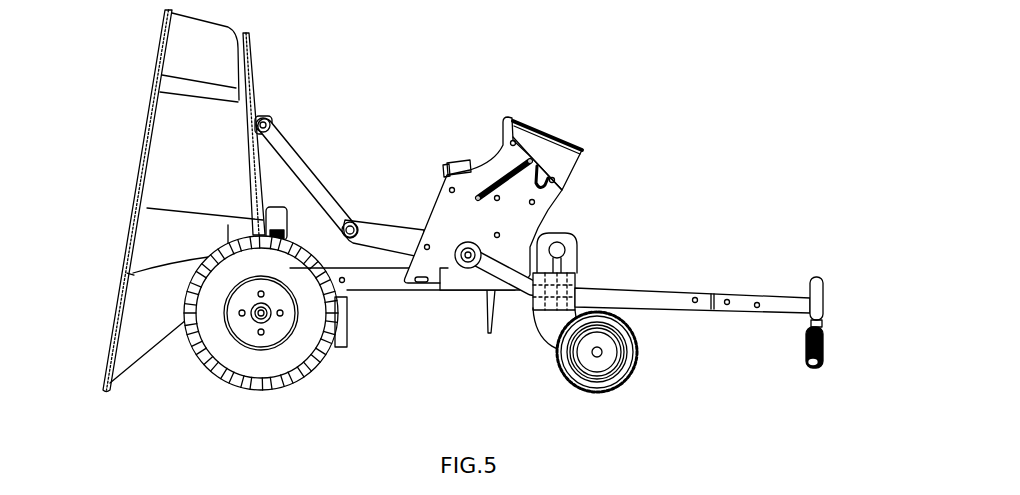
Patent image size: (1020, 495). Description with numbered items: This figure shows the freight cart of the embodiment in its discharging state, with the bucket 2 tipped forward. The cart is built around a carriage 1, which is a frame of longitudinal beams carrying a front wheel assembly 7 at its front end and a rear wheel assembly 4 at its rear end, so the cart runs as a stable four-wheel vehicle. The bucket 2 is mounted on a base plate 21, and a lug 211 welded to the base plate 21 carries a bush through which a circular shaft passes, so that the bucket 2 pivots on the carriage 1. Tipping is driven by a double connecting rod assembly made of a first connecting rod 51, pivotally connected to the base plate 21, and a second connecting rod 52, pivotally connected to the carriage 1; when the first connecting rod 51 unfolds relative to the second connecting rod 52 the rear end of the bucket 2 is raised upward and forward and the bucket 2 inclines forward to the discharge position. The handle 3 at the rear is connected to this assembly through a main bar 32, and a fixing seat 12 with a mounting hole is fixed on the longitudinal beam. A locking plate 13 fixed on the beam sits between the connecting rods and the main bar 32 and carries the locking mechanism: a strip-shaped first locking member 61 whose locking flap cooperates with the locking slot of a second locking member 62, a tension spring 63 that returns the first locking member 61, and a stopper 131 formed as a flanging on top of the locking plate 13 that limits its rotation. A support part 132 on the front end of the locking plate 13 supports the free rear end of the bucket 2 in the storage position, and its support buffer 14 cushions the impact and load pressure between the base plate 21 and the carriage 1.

The carriage 1 is at (387, 273).
The bucket 2 is at (163, 177).
The handle 3 is at (820, 352).
The rear wheel assembly 4 is at (627, 362).
The front wheel assembly 7 is at (223, 338).
The fixing seat 12 is at (463, 267).
The locking plate 13 is at (560, 153).
The support buffer 14 is at (462, 165).
The base plate 21 is at (337, 57).
The main bar 32 is at (667, 300).
The first connecting rod 51 is at (300, 168).
The second connecting rod 52 is at (386, 233).
The first locking member 61 is at (543, 180).
The second locking member 62 is at (567, 253).
The tension spring 63 is at (505, 162).
The stopper 131 is at (578, 148).
The support part 132 is at (455, 162).
The lug 211 is at (272, 220).